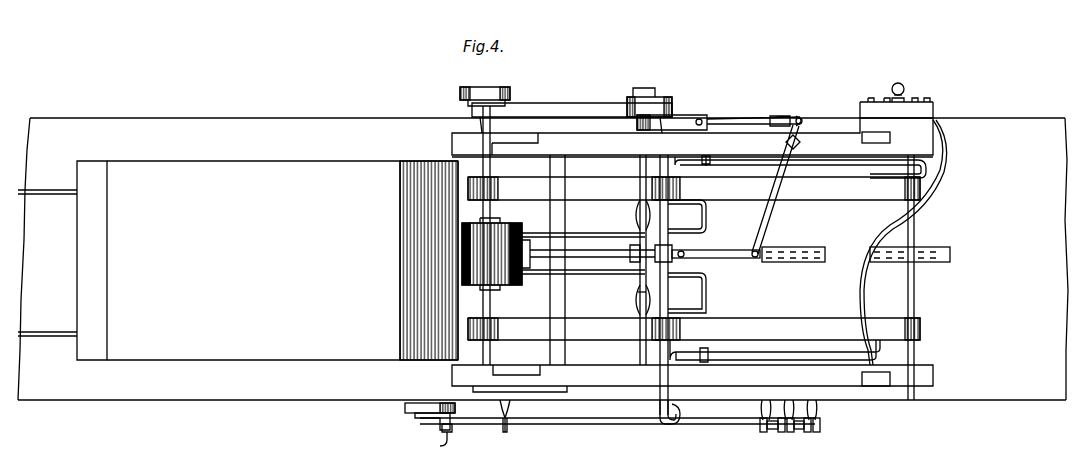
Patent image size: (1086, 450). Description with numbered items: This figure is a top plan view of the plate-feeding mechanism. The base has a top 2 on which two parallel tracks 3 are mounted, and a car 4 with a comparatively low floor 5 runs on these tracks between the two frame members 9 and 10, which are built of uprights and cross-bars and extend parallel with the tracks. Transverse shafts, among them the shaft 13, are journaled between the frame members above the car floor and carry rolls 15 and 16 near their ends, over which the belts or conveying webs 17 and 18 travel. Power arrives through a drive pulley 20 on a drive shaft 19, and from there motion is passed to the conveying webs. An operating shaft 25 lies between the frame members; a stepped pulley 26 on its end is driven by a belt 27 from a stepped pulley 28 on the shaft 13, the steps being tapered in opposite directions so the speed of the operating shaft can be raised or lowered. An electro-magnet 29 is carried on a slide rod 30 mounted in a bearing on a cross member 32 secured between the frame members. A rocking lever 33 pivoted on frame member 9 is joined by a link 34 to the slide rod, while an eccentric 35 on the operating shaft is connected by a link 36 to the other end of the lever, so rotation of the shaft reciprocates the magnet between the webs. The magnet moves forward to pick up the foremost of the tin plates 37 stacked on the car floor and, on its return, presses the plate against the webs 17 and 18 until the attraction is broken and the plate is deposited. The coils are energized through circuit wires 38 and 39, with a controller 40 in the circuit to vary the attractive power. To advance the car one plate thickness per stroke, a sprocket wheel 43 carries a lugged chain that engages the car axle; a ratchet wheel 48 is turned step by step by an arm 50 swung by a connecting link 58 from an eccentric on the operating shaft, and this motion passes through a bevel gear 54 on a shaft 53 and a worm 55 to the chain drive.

The top 2 is at (543, 259).
The tracks 3 is at (48, 188).
The car 4 is at (83, 266).
The floor 5 is at (282, 260).
The frame member 9 is at (818, 145).
The frame member 10 is at (866, 388).
The shaft 13 is at (490, 304).
The rolls 15 is at (468, 191).
The rolls 16 is at (468, 327).
The conveying web 17 is at (866, 199).
The conveying web 18 is at (800, 320).
The drive shaft 19 is at (920, 350).
The drive pulley 20 is at (942, 247).
The operating shaft 25 is at (670, 424).
The stepped pulley 26 is at (663, 100).
The belt 27 is at (580, 107).
The stepped pulley 28 is at (458, 92).
The magnet 29 is at (462, 255).
The slide rod 30 is at (585, 248).
The cross member 32 is at (638, 295).
The rocking lever 33 is at (778, 226).
The link 34 is at (746, 262).
The eccentric 35 is at (688, 114).
The link 36 is at (738, 118).
The tin plates 37 is at (412, 228).
The circuit wire 38 is at (708, 212).
The circuit wire 39 is at (868, 290).
The controller 40 is at (920, 112).
The sprocket wheel 43 is at (798, 264).
The ratchet wheel 48 is at (403, 408).
The arm 50 is at (428, 417).
The shaft 53 is at (598, 426).
The bevel gear 54 is at (424, 448).
The worm 55 is at (790, 431).
The connecting link 58 is at (532, 426).